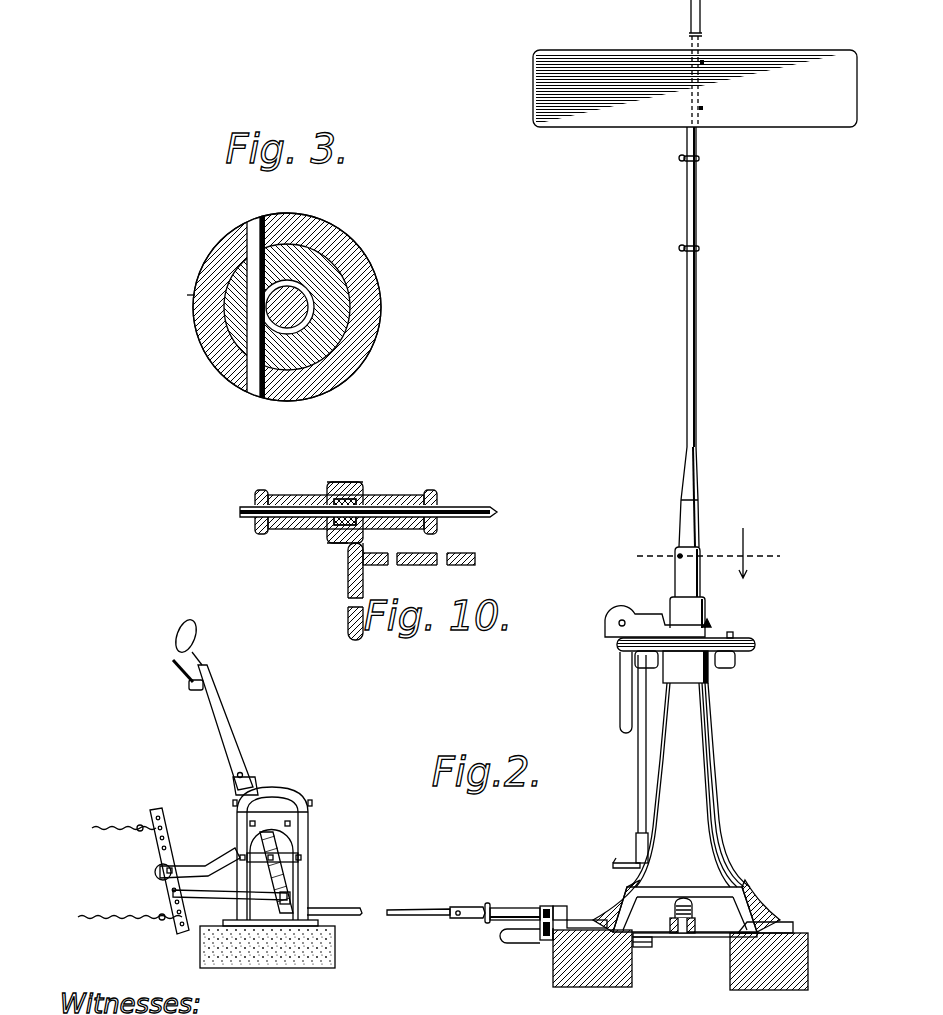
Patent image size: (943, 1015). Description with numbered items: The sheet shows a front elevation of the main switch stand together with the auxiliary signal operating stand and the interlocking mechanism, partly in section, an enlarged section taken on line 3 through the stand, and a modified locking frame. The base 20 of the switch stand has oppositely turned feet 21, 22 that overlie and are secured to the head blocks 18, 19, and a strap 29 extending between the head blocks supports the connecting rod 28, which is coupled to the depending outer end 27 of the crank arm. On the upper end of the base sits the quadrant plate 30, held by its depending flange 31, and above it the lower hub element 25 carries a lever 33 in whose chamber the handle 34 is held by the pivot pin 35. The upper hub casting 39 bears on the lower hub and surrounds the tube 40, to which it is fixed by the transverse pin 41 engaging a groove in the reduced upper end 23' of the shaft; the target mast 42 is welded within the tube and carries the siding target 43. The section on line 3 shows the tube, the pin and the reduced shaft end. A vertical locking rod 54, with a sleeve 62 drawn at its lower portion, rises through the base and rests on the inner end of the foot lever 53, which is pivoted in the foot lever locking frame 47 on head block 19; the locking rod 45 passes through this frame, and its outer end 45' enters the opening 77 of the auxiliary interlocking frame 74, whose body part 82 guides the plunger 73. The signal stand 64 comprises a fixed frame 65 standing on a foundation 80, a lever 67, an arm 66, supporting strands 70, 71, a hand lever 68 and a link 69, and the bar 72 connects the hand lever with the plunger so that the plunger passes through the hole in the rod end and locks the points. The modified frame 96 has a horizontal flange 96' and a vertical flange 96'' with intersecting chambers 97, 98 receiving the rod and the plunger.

In FIG. 2, the head block 18 is at (802, 958).
In FIG. 2, the head block 19 is at (592, 980).
In FIG. 2, the base 20 is at (690, 785).
In FIG. 2, the foot 21 is at (775, 928).
In FIG. 2, the foot 22 is at (597, 925).
In FIG. 3, the reduced upper end of shaft 23' is at (345, 285).
In FIG. 2, the lower hub element 25 is at (712, 624).
In FIG. 2, the depending outer end of crank arm 27 is at (683, 935).
In FIG. 2, the connecting rod 28 is at (695, 927).
In FIG. 2, the strap 29 is at (707, 938).
In FIG. 2, the quadrant plate 30 is at (757, 648).
In FIG. 2, the depending flange 31 is at (712, 677).
In FIG. 2, the lever 33 is at (619, 613).
In FIG. 2, the handle 34 is at (622, 703).
In FIG. 2, the pivot pin 35 is at (617, 623).
In FIG. 3, the upper hub casting 39 is at (357, 357).
In FIG. 2, the upper hub casting 39 is at (672, 594).
In FIG. 3, the tube 40 is at (335, 313).
In FIG. 2, the tube 40 is at (681, 506).
In FIG. 3, the transverse pin 41 is at (252, 392).
In FIG. 2, the transverse pin 41 is at (677, 555).
In FIG. 2, the target mast 42 is at (697, 396).
In FIG. 2, the siding target 43 is at (695, 88).
In FIG. 10, the locking rod 45 is at (324, 527).
In FIG. 2, the outer end of locking rod 45' is at (578, 898).
In FIG. 2, the foot lever locking frame 47 is at (545, 950).
In FIG. 2, the foot lever 53 is at (508, 941).
In FIG. 2, the vertical locking rod 54 is at (638, 773).
In FIG. 2, the sleeve 62 is at (630, 863).
In FIG. 2, the signal stand 64 is at (308, 836).
In FIG. 2, the fixed frame 65 is at (303, 877).
In FIG. 2, the arm 66 is at (215, 866).
In FIG. 2, the lever 67 is at (160, 857).
In FIG. 2, the hand lever 68 is at (225, 736).
In FIG. 2, the link 69 is at (200, 894).
In FIG. 2, the supporting strand 70 is at (120, 814).
In FIG. 2, the supporting strand 71 is at (127, 932).
In FIG. 2, the bar 72 is at (417, 910).
In FIG. 10, the plunger 73 is at (474, 513).
In FIG. 2, the plunger 73 is at (471, 907).
In FIG. 2, the auxiliary interlocking frame 74 is at (542, 906).
In FIG. 2, the opening 77 is at (548, 905).
In FIG. 2, the concrete base 80 is at (273, 950).
In FIG. 2, the body part of T element 82 is at (495, 908).
In FIG. 10, the modified locking frame 96 is at (358, 499).
In FIG. 10, the horizontal flange 96' is at (430, 546).
In FIG. 10, the vertical flange 96'' is at (331, 591).
In FIG. 10, the chamber 97 is at (333, 491).
In FIG. 10, the chamber 98 is at (250, 522).
In FIG. 2, the section line 3 is at (716, 553).